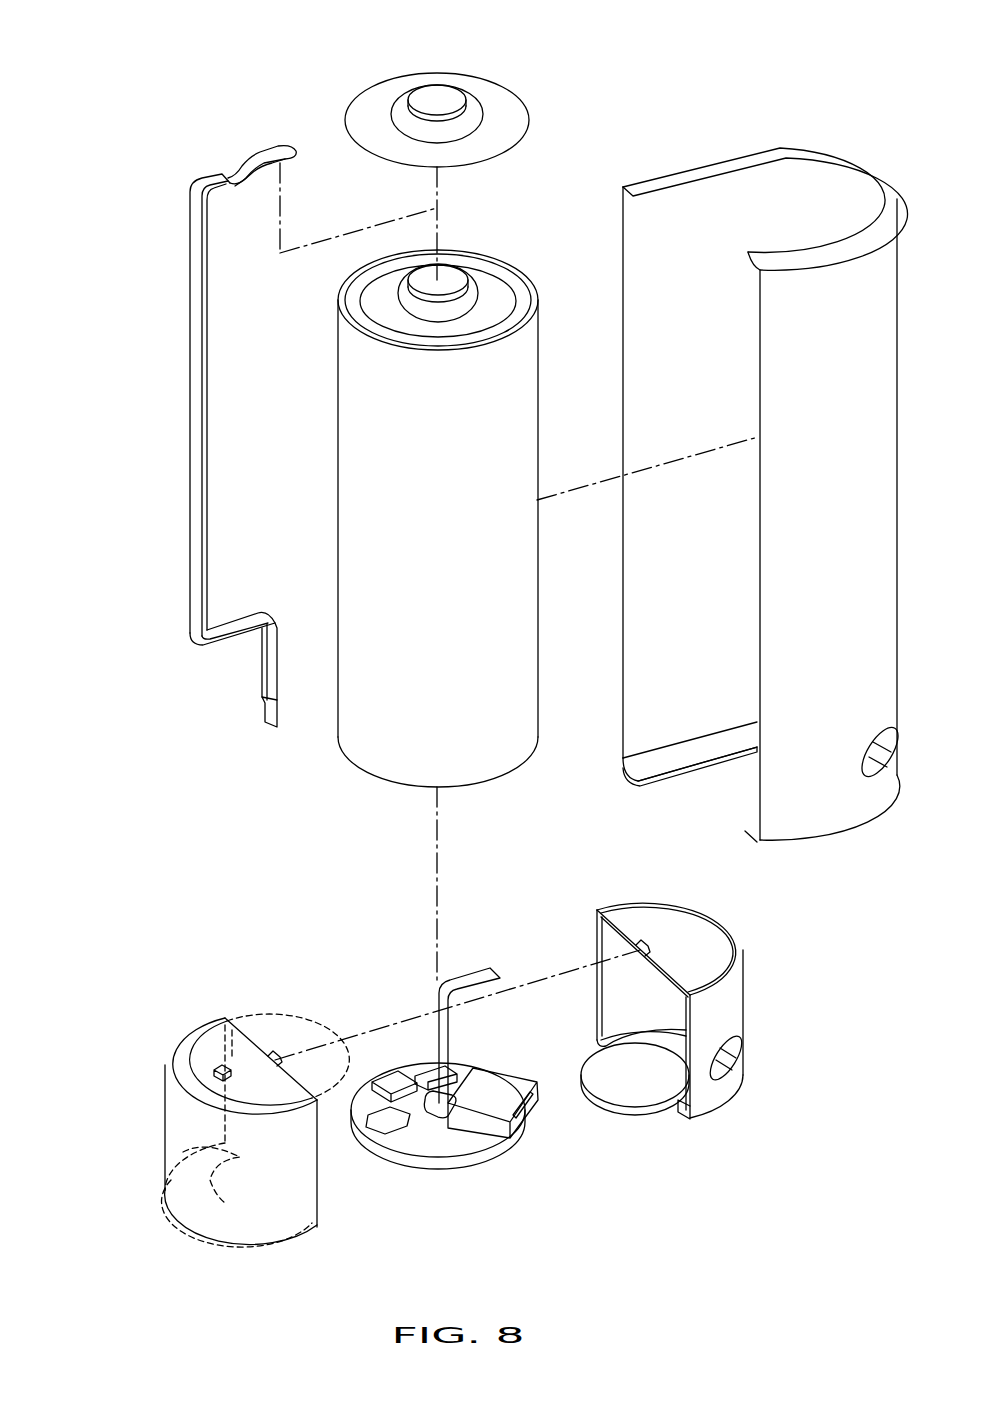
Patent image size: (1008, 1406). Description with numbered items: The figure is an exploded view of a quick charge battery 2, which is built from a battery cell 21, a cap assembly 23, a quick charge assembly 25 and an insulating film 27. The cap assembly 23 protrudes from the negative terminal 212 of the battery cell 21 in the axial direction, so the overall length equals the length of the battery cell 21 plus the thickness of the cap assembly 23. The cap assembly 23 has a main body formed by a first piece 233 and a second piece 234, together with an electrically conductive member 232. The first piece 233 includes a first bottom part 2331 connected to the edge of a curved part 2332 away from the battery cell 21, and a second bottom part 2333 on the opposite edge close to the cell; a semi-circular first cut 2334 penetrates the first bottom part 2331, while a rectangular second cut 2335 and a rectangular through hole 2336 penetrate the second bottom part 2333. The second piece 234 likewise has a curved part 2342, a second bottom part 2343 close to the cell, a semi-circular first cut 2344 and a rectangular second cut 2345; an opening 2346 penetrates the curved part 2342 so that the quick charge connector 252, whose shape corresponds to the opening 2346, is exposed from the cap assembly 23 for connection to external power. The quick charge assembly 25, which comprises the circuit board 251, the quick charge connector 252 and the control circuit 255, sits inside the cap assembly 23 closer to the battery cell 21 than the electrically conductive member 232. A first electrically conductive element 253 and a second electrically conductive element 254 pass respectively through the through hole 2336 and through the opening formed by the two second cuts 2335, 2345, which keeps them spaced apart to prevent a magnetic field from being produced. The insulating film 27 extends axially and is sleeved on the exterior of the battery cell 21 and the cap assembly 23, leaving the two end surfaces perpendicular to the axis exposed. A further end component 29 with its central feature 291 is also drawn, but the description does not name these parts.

The quick charge battery 2 is at (156, 25).
The battery cell 21 is at (552, 375).
The negative terminal 212 is at (472, 786).
The cap assembly 23 is at (660, 882).
The electrically conductive member 232 is at (637, 1075).
The first piece 233 is at (70, 960).
The first bottom part 2331 is at (197, 1187).
The curved part 2332 is at (192, 1130).
The second bottom part 2333 is at (210, 1050).
The first cut 2334 is at (193, 1213).
The second cut 2335 is at (276, 1060).
The through hole 2336 is at (222, 1072).
The second piece 234 is at (858, 868).
The curved part 2342 is at (732, 1008).
The second bottom part 2343 is at (702, 952).
The first cut 2344 is at (677, 1112).
The second cut 2345 is at (650, 947).
The opening 2346 is at (735, 1058).
The quick charge assembly 25 is at (354, 1014).
The circuit board 251 is at (465, 1153).
The quick charge connector 252 is at (503, 1088).
The first electrically conductive element 253 is at (248, 160).
The second electrically conductive element 254 is at (478, 975).
The control circuit 255 is at (396, 1082).
The insulating film 27 is at (868, 172).
The cap 29 is at (497, 112).
The protrusion of cap 291 is at (437, 98).